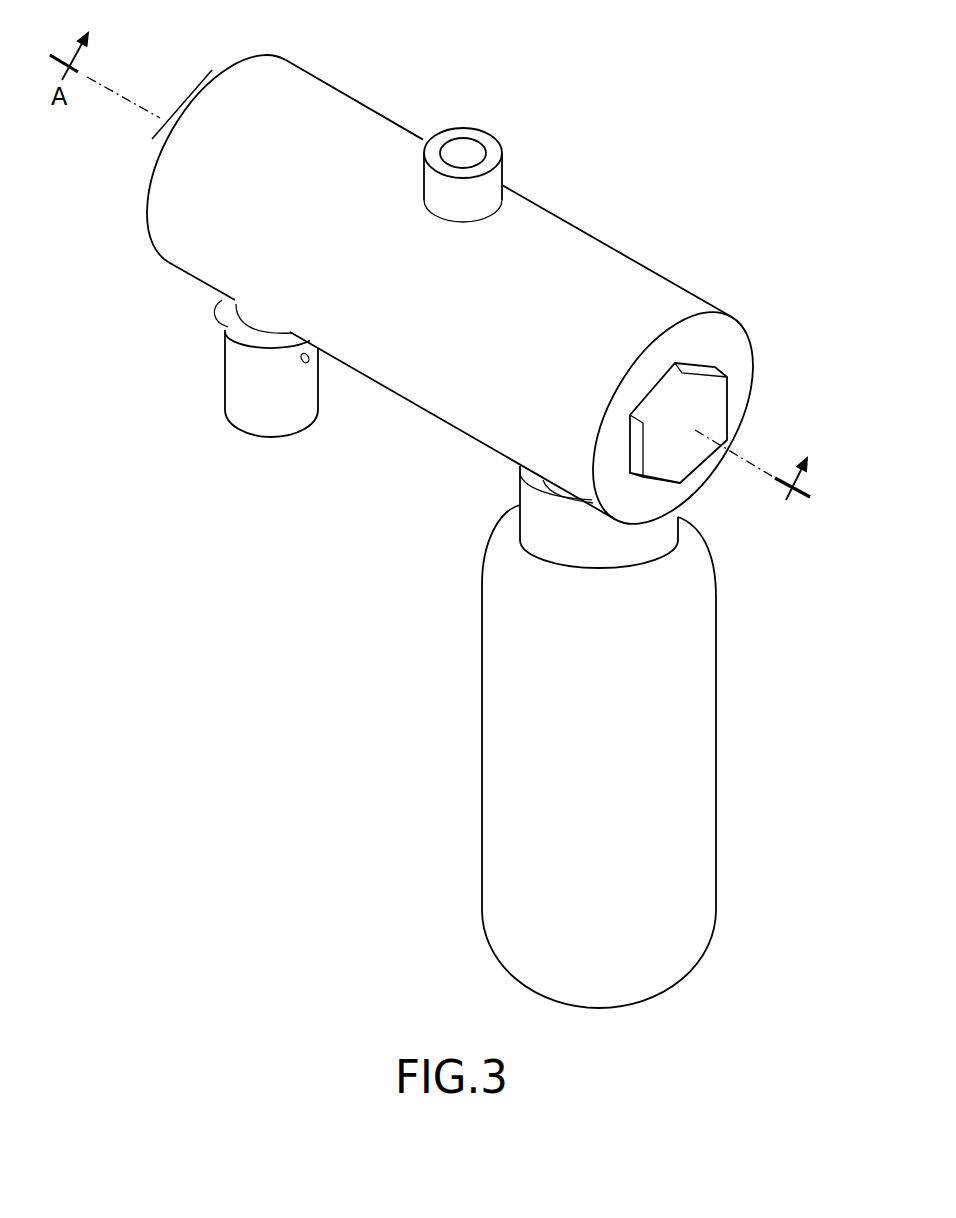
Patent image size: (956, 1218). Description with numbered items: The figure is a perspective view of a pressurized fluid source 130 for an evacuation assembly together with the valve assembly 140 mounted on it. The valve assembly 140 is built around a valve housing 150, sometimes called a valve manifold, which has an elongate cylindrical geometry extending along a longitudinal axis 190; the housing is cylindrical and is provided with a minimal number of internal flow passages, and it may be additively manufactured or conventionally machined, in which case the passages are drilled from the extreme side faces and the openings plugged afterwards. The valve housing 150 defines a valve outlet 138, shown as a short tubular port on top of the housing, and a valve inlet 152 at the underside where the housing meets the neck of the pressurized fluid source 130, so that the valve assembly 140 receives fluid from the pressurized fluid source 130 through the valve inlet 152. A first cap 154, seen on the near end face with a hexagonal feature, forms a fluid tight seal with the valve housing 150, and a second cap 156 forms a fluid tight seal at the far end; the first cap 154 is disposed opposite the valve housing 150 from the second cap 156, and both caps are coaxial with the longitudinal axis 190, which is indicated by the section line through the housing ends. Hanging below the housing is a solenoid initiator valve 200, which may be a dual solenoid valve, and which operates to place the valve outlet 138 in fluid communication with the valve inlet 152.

The pressurized fluid source 130 is at (492, 645).
The valve outlet 138 is at (466, 134).
The valve assembly 140 is at (610, 149).
The valve housing 150 is at (526, 303).
The valve inlet 152 is at (542, 496).
The first cap 154 is at (718, 412).
The second cap 156 is at (185, 110).
The longitudinal axis 190 is at (809, 498).
The solenoid initiator valve 200 is at (220, 373).